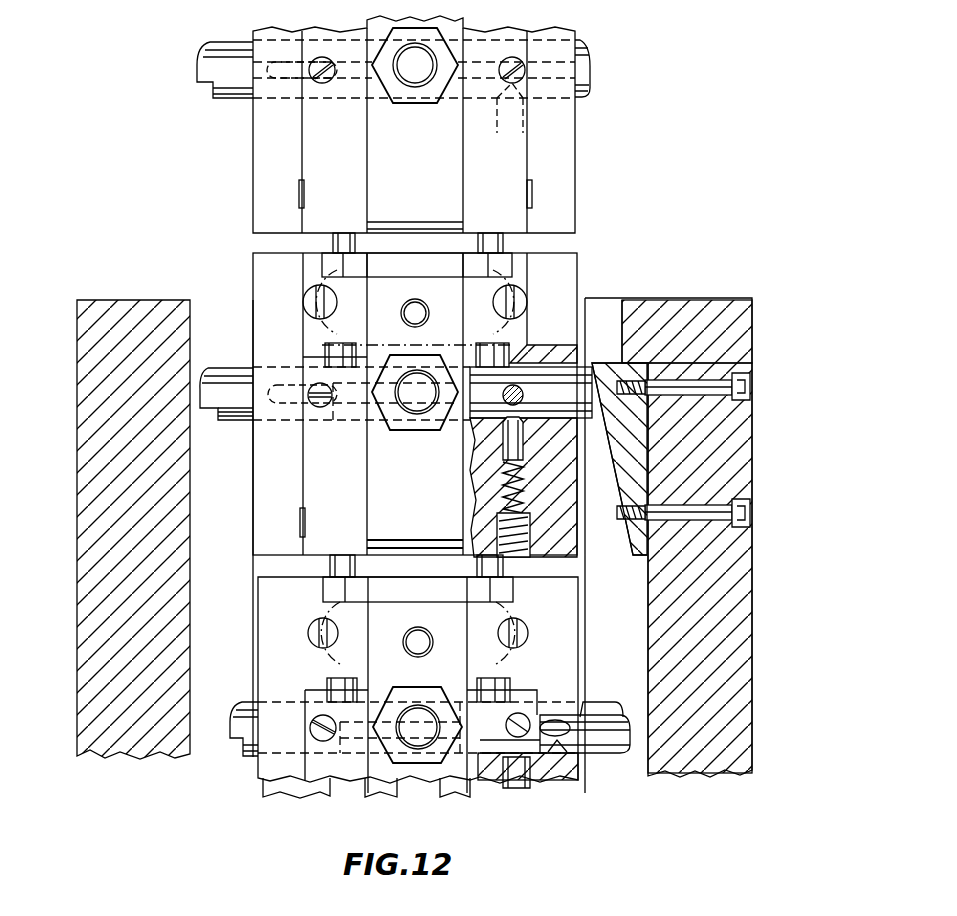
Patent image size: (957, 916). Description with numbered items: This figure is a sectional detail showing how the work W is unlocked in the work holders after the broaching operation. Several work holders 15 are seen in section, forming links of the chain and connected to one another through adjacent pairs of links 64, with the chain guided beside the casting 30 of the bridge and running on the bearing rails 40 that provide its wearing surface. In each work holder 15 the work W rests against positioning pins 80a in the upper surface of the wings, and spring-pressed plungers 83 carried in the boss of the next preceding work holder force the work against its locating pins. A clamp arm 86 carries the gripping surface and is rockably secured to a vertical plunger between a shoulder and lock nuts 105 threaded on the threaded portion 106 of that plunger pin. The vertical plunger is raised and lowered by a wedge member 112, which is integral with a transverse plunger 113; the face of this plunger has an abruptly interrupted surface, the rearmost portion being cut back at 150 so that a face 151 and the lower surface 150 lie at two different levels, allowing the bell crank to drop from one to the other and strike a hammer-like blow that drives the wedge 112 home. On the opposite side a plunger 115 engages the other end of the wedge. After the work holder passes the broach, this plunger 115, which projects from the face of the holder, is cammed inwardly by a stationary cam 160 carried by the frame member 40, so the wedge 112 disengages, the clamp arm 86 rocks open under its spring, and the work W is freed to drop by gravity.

The work holder 15 is at (268, 162).
The casting 30 is at (85, 672).
The bearing rails 40 is at (283, 790).
The links 64 is at (375, 792).
The pins 80a is at (310, 318).
The plungers 83 is at (333, 243).
The clamp arm 86 is at (380, 517).
The lock nuts 105 is at (395, 430).
The threaded portion 106 is at (425, 407).
The wedge member 112 is at (358, 420).
The plunger 113 is at (222, 98).
The plunger 115 is at (592, 82).
The cut-back surface 150 is at (232, 418).
The face 151 is at (206, 373).
The stationary cam 160 is at (623, 487).
The work W is at (306, 322).